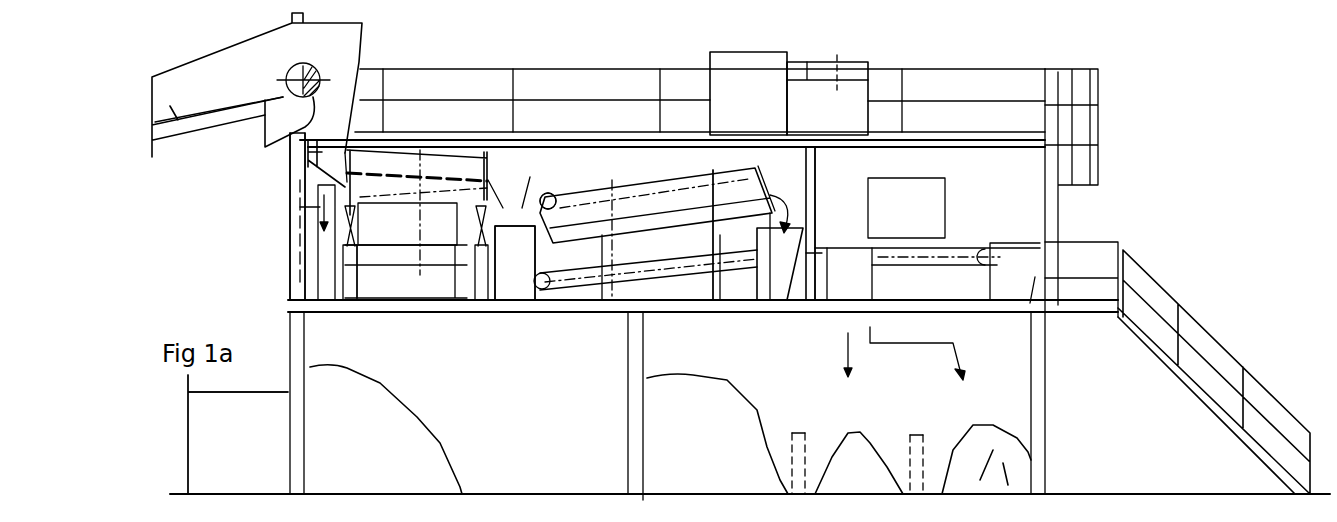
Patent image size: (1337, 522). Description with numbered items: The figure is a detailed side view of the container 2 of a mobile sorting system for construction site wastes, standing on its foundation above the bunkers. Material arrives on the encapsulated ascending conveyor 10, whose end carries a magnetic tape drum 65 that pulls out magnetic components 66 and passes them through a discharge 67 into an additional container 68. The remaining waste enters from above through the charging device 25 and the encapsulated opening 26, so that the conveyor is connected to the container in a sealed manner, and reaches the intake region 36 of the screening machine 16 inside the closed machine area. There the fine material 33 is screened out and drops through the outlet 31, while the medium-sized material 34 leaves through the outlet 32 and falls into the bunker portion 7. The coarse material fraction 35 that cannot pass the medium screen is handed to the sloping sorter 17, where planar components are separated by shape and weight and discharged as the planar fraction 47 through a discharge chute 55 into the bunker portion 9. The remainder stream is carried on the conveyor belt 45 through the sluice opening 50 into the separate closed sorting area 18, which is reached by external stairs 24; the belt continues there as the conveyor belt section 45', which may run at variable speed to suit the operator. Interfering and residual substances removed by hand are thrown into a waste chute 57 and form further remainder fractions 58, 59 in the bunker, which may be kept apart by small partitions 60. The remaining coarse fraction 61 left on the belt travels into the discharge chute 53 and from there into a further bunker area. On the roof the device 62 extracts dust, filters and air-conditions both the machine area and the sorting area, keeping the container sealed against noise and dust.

The container 2 is at (266, 213).
The bunker portion 7 is at (520, 424).
The bunker portion 9 is at (697, 356).
The ascending conveyor 10 is at (219, 134).
The screening machine 16 is at (441, 152).
The sloping sorter 17 is at (622, 198).
The sorting area 18 is at (1040, 212).
The external stairs 24 is at (1210, 316).
The charging device 25 is at (358, 40).
The encapsulated opening 26 is at (354, 134).
The outlet 31 is at (288, 288).
The outlet 32 is at (497, 275).
The fine material 33 is at (290, 230).
The medium-sized material 34 is at (512, 220).
The coarse material fraction 35 is at (552, 172).
The intake region 36 is at (292, 165).
The conveyor belt 45 is at (652, 238).
The conveyor belt section 45' is at (927, 234).
The planar fraction 47 is at (706, 390).
The sluice opening 50 is at (822, 250).
The discharge chute 53 is at (998, 290).
The discharge chute 55 is at (752, 274).
The waste chute 57 is at (864, 290).
The remainder fraction 58 is at (852, 432).
The remainder fraction 59 is at (962, 438).
The small partitions 60 is at (807, 462).
The remaining coarse fraction 61 is at (1005, 339).
The extracting, filtering and air-conditioning device 62 is at (825, 60).
The magnetic tape drum 65 is at (310, 64).
The magnetic components 66 is at (237, 172).
The discharge 67 is at (266, 115).
The additional container 68 is at (203, 434).